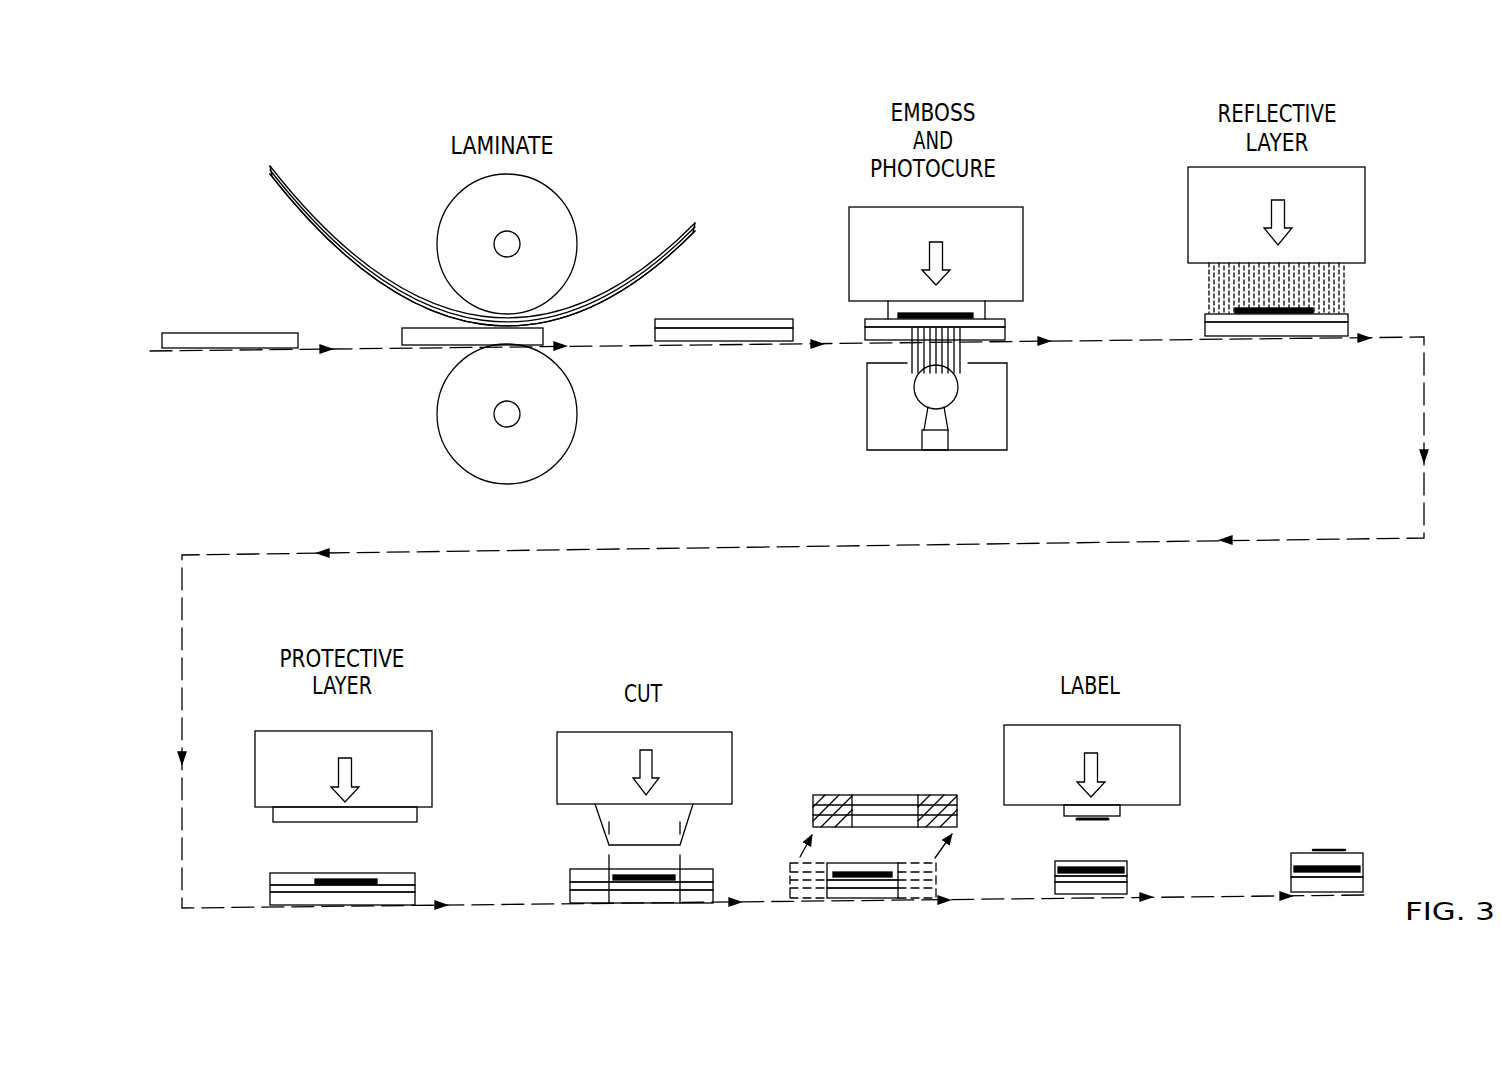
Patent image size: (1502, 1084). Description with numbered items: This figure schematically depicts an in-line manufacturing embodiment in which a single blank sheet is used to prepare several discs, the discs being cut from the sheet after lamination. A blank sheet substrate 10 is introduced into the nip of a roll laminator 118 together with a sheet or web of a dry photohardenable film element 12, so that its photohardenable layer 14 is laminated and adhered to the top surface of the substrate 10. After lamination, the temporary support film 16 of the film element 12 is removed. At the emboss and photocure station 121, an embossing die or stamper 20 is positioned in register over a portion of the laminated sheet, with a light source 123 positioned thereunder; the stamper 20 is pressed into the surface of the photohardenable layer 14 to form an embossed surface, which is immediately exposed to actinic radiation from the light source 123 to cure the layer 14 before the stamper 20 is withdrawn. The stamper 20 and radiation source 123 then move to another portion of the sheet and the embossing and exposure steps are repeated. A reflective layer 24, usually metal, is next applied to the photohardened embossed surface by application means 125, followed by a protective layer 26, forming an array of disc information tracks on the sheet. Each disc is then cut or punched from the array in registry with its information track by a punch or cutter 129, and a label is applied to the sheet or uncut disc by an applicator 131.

The blank sheet substrate 10 is at (228, 335).
The dry photohardenable film element 12 is at (320, 210).
The photohardenable layer 14 is at (312, 240).
The temporary support film 16 is at (358, 267).
The embossing die or stamper 20 is at (890, 313).
The reflective layer 24 is at (1342, 310).
The protective layer 26 is at (368, 873).
The roll laminator 118 is at (560, 193).
The emboss and photocure station 121 is at (877, 203).
The light source 123 is at (866, 418).
The application means 125 is at (1206, 165).
The punch or cutter 129 is at (582, 732).
The applicator 131 is at (1151, 720).